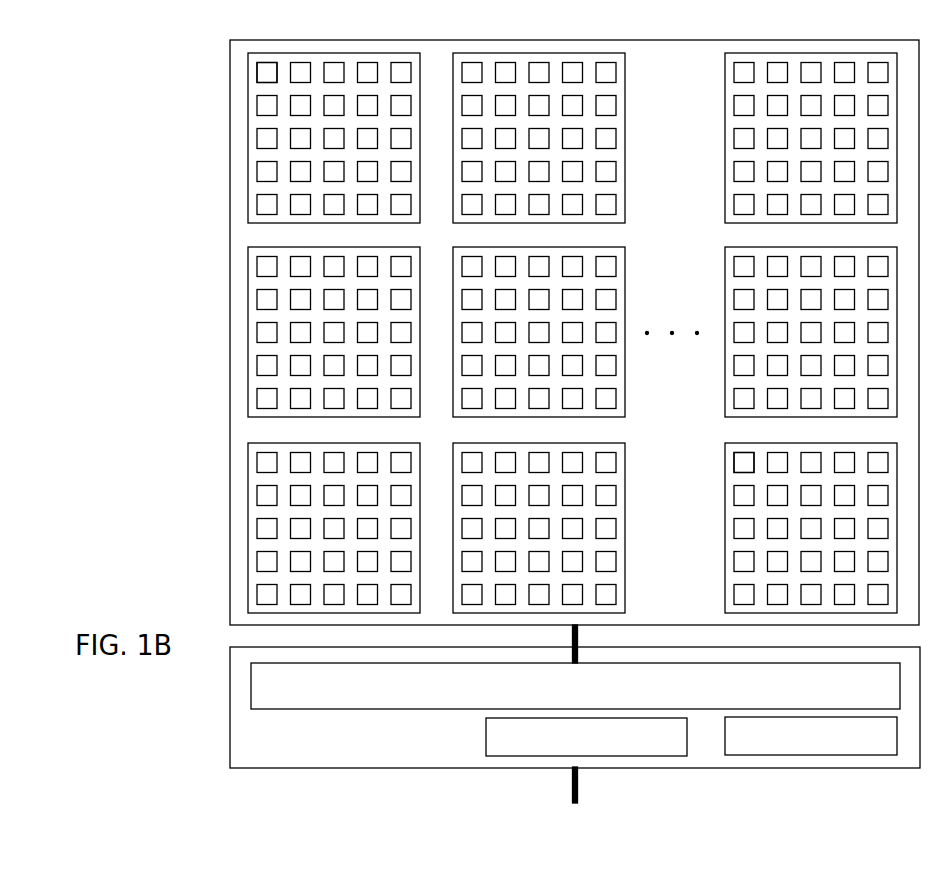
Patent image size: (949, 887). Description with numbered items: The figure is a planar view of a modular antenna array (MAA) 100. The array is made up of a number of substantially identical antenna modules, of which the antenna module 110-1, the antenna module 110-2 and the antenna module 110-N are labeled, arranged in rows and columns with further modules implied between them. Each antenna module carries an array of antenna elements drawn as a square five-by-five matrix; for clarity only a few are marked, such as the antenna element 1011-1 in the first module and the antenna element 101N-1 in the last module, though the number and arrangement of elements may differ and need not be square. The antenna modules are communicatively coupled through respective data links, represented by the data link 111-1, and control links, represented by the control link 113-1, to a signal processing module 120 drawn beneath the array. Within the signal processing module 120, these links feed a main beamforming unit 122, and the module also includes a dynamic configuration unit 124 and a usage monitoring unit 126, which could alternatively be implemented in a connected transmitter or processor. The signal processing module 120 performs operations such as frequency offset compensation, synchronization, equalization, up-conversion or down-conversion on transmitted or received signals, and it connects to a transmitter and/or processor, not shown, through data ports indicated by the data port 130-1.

The modular antenna array 100 is at (140, 115).
The antenna element 1011-1 is at (268, 73).
The antenna element 101N-1 is at (745, 466).
The antenna module 110-1 is at (285, 118).
The antenna module 110-2 is at (250, 346).
The antenna module 110-N is at (772, 503).
The data link 111-1 is at (326, 613).
The control link 113-1 is at (573, 639).
The signal processing module 120 is at (470, 751).
The main beamforming unit 122 is at (672, 693).
The dynamic configuration unit 124 is at (617, 755).
The usage monitoring unit 126 is at (840, 755).
The data port 130-1 is at (577, 786).